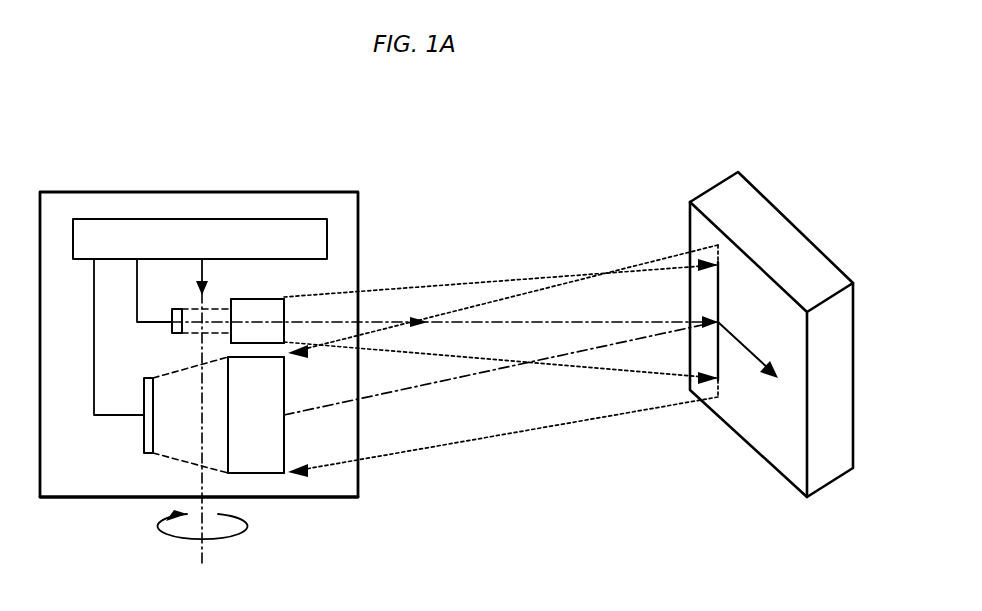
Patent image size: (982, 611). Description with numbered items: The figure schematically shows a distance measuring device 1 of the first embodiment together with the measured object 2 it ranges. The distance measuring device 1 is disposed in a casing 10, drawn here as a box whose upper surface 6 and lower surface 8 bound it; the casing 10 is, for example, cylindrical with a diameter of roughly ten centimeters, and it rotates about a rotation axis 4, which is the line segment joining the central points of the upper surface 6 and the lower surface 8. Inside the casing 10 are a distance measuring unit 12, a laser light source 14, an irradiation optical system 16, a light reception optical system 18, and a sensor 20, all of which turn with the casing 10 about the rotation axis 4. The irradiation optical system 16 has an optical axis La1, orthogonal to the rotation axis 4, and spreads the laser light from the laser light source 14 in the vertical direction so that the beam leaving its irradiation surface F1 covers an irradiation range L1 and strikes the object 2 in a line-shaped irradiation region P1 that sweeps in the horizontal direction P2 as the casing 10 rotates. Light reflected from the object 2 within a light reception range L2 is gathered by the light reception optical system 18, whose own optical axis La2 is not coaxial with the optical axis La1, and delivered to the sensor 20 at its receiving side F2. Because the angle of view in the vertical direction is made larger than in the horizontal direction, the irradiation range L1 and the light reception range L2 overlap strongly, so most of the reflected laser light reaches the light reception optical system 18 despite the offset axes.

The distance measuring device 1 is at (587, 178).
The measured object 2 is at (774, 238).
The rotation axis 4 is at (200, 550).
The upper surface 6 is at (202, 190).
The lower surface 8 is at (102, 499).
The casing 10 is at (286, 177).
The distance measuring unit 12 is at (137, 218).
The laser light source 14 is at (173, 328).
The irradiation optical system 16 is at (258, 299).
The light reception optical system 18 is at (267, 463).
The sensor 20 is at (146, 436).
The irradiation surface F1 is at (284, 310).
The light receiving unit F2 is at (284, 435).
The irradiation range L1 is at (480, 280).
The light reception range L2 is at (588, 420).
The optical axis La1 is at (566, 320).
The optical axis La2 is at (416, 386).
The irradiation region P1 is at (718, 290).
The direction P2 is at (743, 352).